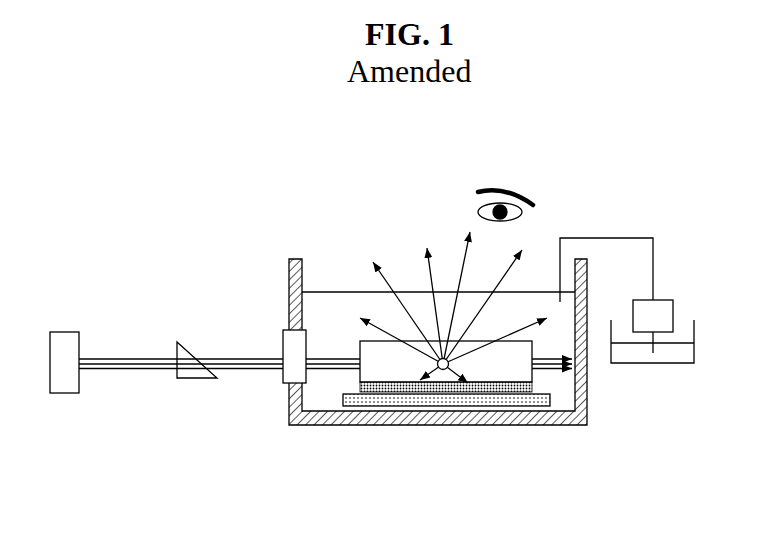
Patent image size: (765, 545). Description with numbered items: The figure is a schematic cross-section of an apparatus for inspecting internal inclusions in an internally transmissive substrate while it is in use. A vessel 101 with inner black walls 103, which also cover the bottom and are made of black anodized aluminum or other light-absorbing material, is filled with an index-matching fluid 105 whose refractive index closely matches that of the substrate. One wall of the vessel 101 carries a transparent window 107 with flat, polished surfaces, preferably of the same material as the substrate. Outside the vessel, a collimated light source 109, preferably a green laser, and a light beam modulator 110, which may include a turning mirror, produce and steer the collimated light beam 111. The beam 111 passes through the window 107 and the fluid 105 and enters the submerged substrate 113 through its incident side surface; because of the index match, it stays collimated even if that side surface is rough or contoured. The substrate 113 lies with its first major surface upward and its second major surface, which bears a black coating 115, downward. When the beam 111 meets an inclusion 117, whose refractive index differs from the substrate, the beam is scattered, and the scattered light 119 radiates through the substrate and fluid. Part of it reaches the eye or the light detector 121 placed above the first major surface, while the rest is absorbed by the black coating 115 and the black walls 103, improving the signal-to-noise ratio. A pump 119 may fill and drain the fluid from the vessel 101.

The vessel 101 is at (290, 271).
The inner black walls 103 is at (306, 280).
The index-matching fluid 105 is at (530, 302).
The transparent window 107 is at (283, 340).
The collimated light source 109 is at (79, 342).
The light beam modulator 110 is at (183, 386).
The collimated light beam 111 is at (253, 373).
The substrate 113 is at (372, 341).
The black coating 115 is at (394, 406).
The inclusion 117 is at (445, 379).
The scattered light 119 is at (455, 256).
The light detector 121 is at (534, 212).